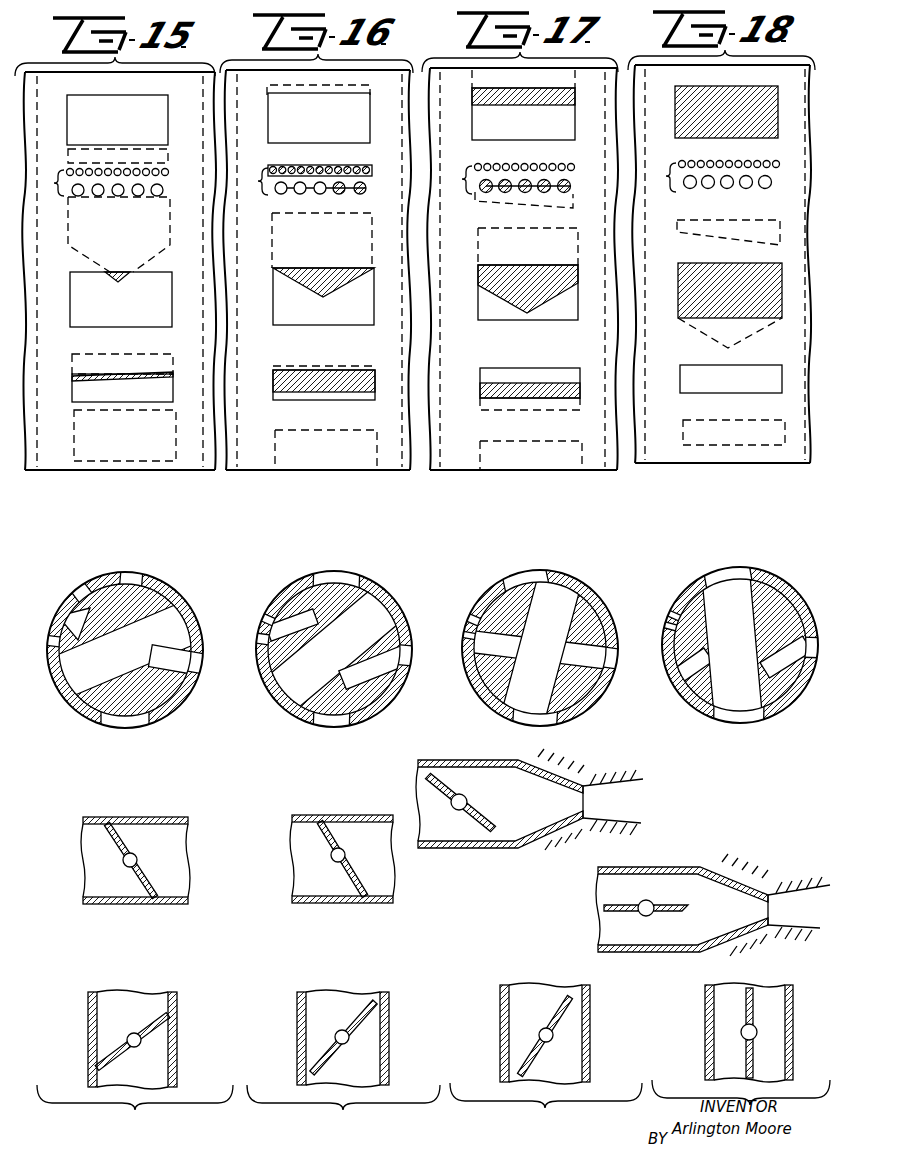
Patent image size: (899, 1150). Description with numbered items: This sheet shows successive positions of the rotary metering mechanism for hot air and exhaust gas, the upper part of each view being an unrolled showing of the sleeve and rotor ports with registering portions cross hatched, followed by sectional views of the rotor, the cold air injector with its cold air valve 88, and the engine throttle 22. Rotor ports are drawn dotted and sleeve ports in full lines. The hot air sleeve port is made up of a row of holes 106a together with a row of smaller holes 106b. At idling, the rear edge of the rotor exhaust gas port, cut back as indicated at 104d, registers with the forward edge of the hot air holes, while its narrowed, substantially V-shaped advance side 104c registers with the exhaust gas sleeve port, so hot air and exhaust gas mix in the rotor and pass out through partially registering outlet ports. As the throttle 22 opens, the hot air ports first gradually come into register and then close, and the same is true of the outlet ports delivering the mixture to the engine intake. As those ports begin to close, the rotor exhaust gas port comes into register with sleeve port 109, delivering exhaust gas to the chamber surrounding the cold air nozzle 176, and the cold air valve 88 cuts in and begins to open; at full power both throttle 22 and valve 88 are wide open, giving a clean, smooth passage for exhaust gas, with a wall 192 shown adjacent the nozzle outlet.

In FIG. 15, the throttle 22 is at (113, 1055).
In FIG. 16, the throttle 22 is at (323, 1057).
In FIG. 17, the throttle 22 is at (535, 1054).
In FIG. 18, the throttle 22 is at (746, 1052).
In FIG. 15, the cold air valve 88 is at (148, 877).
In FIG. 16, the cold air valve 88 is at (353, 877).
In FIG. 17, the cold air valve 88 is at (478, 816).
In FIG. 18, the cold air valve 88 is at (672, 912).
In FIG. 17, the narrowed advance side 104c is at (522, 718).
In FIG. 18, the narrowed advance side 104c is at (770, 710).
In FIG. 15, the cut back rear edge 104d is at (64, 638).
In FIG. 16, the cut back rear edge 104d is at (277, 660).
In FIG. 17, the cut back rear edge 104d is at (493, 676).
In FIG. 18, the cut back rear edge 104d is at (712, 688).
In FIG. 15, the row of holes 106a is at (122, 197).
In FIG. 16, the row of holes 106a is at (300, 195).
In FIG. 17, the row of holes 106a is at (570, 187).
In FIG. 18, the row of holes 106a is at (764, 188).
In FIG. 15, the row of smaller holes 106b is at (99, 168).
In FIG. 17, the row of smaller holes 106b is at (540, 159).
In FIG. 18, the row of smaller holes 106b is at (702, 164).
In FIG. 15, the sleeve port 109 is at (123, 575).
In FIG. 16, the sleeve port 109 is at (326, 573).
In FIG. 17, the sleeve port 109 is at (528, 573).
In FIG. 18, the sleeve port 109 is at (731, 570).
In FIG. 17, the cold air nozzle 176 is at (470, 849).
In FIG. 18, the cold air nozzle 176 is at (652, 952).
In FIG. 17, the wall 192 is at (575, 776).
In FIG. 18, the wall 192 is at (757, 882).